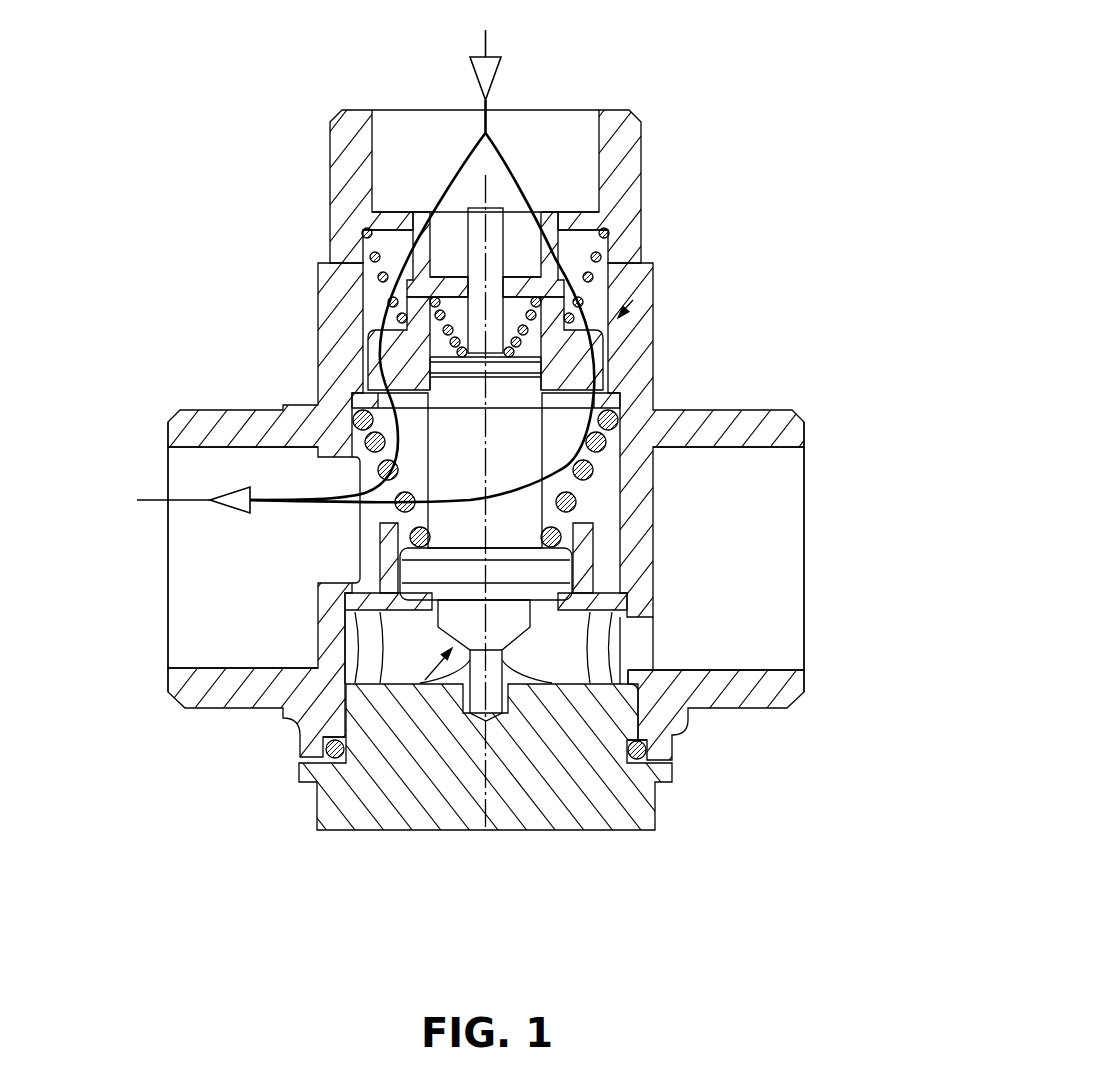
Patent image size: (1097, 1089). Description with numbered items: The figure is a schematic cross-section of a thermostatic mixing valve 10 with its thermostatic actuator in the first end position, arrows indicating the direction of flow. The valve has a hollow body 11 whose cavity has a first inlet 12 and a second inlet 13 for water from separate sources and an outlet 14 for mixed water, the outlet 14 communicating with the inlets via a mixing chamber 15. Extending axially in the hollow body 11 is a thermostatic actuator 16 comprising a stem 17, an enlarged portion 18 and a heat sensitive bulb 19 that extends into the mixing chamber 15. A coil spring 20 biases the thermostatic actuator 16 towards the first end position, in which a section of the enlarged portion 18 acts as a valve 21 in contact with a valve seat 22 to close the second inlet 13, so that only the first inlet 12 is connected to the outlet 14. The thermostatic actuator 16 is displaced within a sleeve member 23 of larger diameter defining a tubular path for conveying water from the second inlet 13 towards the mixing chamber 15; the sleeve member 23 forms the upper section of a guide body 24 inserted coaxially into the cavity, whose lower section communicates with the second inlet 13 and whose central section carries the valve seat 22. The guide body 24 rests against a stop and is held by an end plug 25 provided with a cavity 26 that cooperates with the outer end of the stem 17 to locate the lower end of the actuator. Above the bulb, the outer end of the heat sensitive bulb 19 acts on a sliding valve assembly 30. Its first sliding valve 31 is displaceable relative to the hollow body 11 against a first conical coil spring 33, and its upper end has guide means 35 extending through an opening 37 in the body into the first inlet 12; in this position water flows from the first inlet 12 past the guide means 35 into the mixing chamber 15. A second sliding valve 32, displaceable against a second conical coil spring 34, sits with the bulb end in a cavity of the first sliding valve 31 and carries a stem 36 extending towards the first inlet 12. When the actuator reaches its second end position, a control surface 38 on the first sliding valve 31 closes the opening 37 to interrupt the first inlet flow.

The thermostatic mixing valve 10 is at (729, 63).
The hollow body 11 is at (343, 290).
The first inlet 12 is at (553, 140).
The second inlet 13 is at (763, 575).
The outlet 14 is at (208, 573).
The mixing chamber 15 is at (450, 367).
The thermostatic actuator 16 is at (425, 680).
The stem 17 is at (483, 714).
The enlarged portion 18 is at (540, 622).
The heat sensitive bulb 19 is at (621, 316).
The coil spring 20 is at (615, 397).
The valve 21 is at (600, 635).
The valve seat 22 is at (420, 607).
The sleeve member 23 is at (585, 566).
The guide body 24 is at (627, 650).
The end plug 25 is at (633, 790).
The cavity 26 is at (535, 690).
The sliding valve assembly 30 is at (608, 292).
The first sliding valve 31 is at (592, 272).
The second sliding valve 32 is at (450, 340).
The first conical coil spring 33 is at (425, 300).
The second conical coil spring 34 is at (375, 257).
The guide means 35 is at (640, 228).
The stem 36 is at (452, 228).
The opening 37 is at (440, 235).
The control surface 38 is at (530, 275).